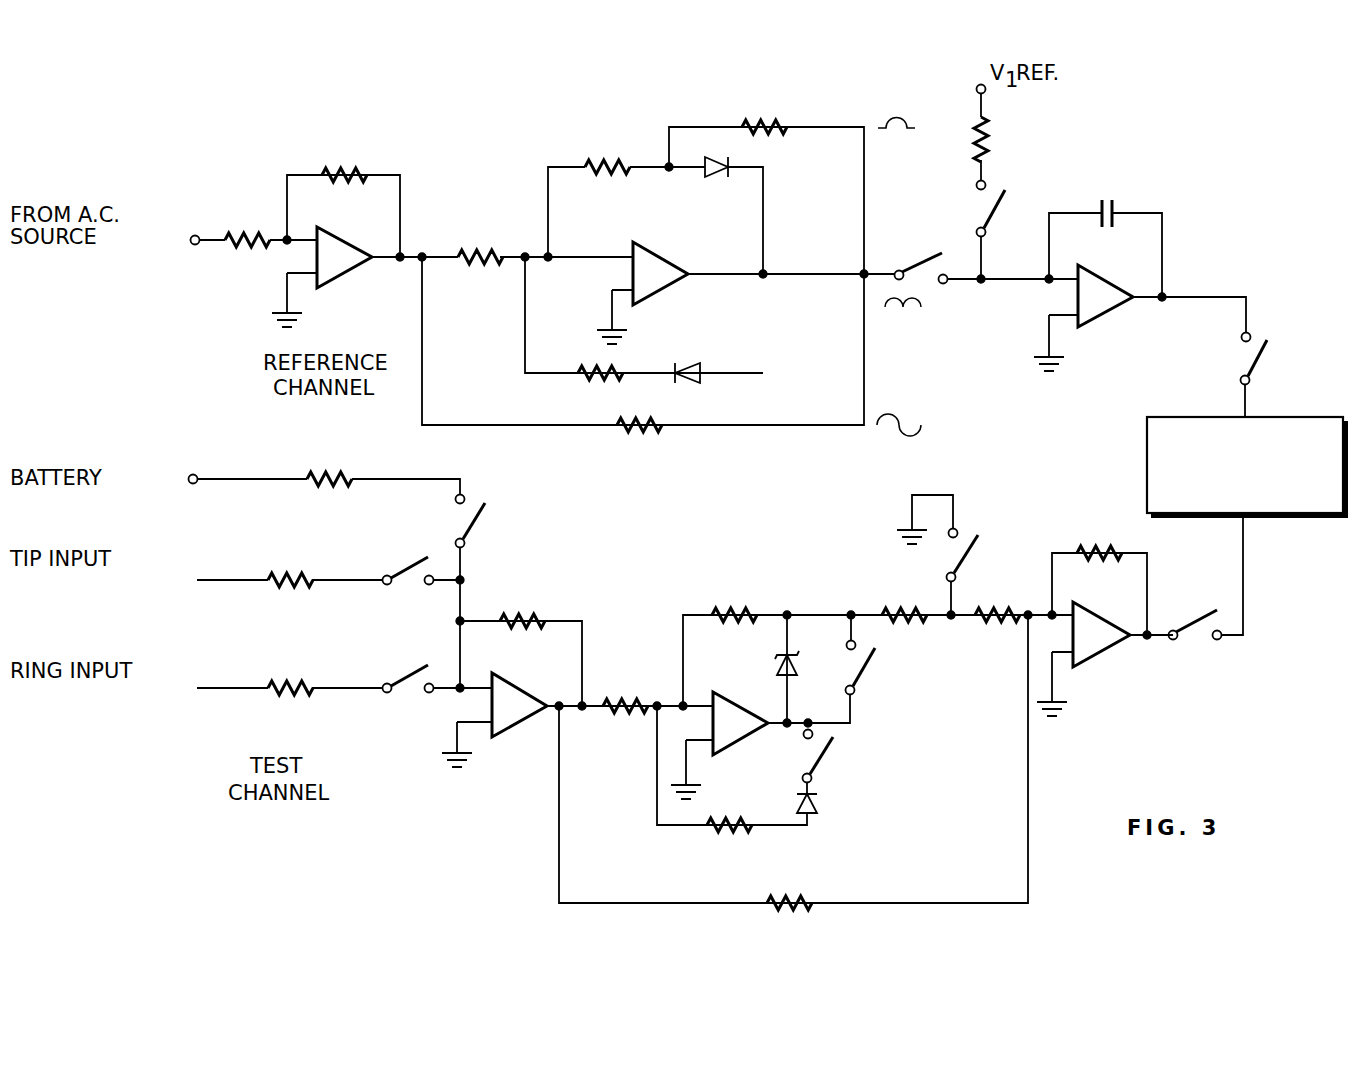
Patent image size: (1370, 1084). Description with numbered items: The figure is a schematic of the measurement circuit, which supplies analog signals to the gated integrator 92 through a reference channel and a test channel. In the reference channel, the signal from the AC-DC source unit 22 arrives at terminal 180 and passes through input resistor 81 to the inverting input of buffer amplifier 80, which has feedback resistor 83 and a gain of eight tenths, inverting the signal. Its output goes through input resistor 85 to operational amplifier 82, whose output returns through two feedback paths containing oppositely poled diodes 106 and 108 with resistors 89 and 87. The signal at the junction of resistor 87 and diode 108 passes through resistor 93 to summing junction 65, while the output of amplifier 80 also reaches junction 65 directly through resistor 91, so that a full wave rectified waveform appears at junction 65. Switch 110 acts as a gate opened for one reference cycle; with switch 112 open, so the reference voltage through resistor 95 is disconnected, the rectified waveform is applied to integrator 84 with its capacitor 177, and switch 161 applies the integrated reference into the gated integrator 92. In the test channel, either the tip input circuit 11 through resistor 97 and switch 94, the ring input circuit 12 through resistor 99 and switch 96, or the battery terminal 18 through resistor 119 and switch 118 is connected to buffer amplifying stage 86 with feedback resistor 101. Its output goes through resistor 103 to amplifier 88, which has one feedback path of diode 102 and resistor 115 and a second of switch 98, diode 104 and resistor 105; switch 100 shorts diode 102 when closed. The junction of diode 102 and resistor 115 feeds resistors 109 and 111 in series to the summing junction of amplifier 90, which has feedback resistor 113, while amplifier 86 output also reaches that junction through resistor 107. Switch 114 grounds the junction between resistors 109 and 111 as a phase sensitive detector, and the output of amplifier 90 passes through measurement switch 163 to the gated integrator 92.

The AC-DC source unit 22 is at (52, 259).
The tip input circuit 11 is at (68, 596).
The ring input circuit 12 is at (68, 709).
The terminal 180 is at (193, 247).
The input resistor 81 is at (247, 247).
The resistor 83 is at (337, 182).
The buffer amplifier 80 is at (336, 262).
The input resistor 85 is at (480, 264).
The resistor 87 is at (600, 175).
The resistor 93 is at (770, 135).
The diode 108 is at (720, 175).
The operational amplifier 82 is at (666, 314).
The diode 106 is at (690, 366).
The resistor 89 is at (592, 380).
The resistor 91 is at (635, 432).
The summing junction 65 is at (862, 279).
The switch 110 is at (908, 268).
The resistor 95 is at (988, 142).
The switch 112 is at (1001, 202).
The capacitor 177 is at (1115, 207).
The integrator 84 is at (1093, 302).
The switch 161 is at (1258, 358).
The gated integrator 92 is at (1147, 453).
The measurement switch 163 is at (1186, 624).
The battery terminal 18 is at (196, 474).
The resistor 119 is at (330, 472).
The switch 118 is at (478, 522).
The resistor 97 is at (290, 573).
The switch 94 is at (400, 565).
The resistor 99 is at (288, 681).
The switch 96 is at (402, 672).
The resistor 101 is at (527, 628).
The buffer amplifying stage 86 is at (517, 710).
The resistor 103 is at (618, 713).
The resistor 115 is at (712, 622).
The diode 102 is at (774, 668).
The amplifier 88 is at (732, 735).
The switch 100 is at (868, 668).
The switch 98 is at (824, 758).
The diode 104 is at (815, 802).
The resistor 105 is at (730, 832).
The resistor 107 is at (790, 910).
The resistor 109 is at (902, 622).
The resistor 111 is at (996, 622).
The switch 114 is at (965, 548).
The resistor 113 is at (1077, 560).
The amplifier 90 is at (1096, 645).